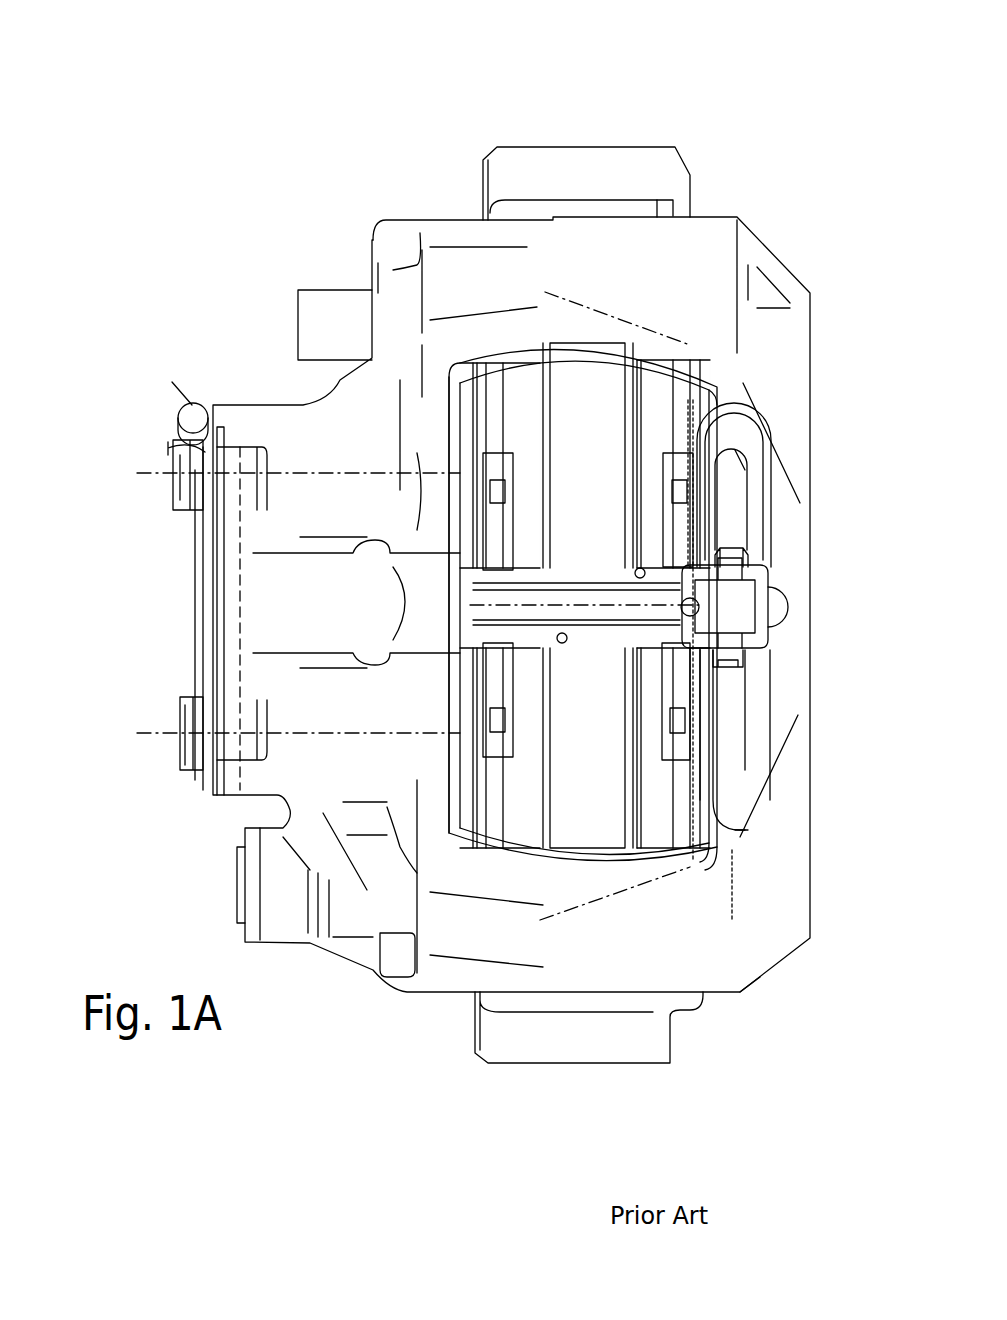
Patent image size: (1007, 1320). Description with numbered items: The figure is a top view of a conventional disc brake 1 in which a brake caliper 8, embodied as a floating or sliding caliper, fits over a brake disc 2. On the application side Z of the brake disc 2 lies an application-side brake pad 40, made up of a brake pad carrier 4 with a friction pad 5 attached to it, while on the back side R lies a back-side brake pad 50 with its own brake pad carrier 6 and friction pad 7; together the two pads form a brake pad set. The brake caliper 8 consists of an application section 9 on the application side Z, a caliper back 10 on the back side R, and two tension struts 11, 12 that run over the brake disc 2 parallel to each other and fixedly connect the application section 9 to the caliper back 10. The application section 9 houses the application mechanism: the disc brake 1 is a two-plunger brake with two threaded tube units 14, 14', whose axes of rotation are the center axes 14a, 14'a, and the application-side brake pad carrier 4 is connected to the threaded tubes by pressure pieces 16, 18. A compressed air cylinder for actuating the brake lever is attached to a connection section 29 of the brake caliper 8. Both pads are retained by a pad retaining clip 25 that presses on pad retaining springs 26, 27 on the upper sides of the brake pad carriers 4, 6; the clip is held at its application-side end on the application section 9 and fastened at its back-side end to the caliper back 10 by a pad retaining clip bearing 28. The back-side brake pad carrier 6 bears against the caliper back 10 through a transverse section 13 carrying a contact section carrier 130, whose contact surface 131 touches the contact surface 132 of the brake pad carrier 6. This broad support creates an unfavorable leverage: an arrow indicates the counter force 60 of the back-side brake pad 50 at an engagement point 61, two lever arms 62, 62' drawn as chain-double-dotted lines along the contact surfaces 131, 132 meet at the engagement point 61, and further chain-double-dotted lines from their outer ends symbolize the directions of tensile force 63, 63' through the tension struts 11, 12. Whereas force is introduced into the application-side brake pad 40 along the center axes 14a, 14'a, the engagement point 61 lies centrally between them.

The disc brake 1 is at (330, 108).
The brake disc 2 is at (573, 357).
The brake pad carrier 4 is at (490, 365).
The friction pad 5 is at (517, 370).
The brake pad carrier 6 is at (677, 373).
The friction pad 7 is at (662, 377).
The brake caliper 8 is at (598, 212).
The application section 9 is at (433, 973).
The caliper back 10 is at (748, 850).
The tension strut 11 is at (650, 243).
The tension strut 12 is at (582, 960).
The transverse section 13 is at (710, 750).
The threaded tube unit 14 is at (251, 473).
The center axis 14a is at (157, 472).
The threaded tube unit 14' is at (251, 733).
The center axis 14'a is at (157, 713).
The pressure piece 16 is at (490, 432).
The pressure piece 18 is at (460, 768).
The pad retaining clip 25 is at (603, 600).
The pad retaining spring 26 is at (497, 510).
The pad retaining spring 27 is at (677, 745).
The pad retaining clip bearing 28 is at (728, 590).
The connection section 29 is at (230, 578).
The application-side brake pad 40 is at (508, 43).
The back-side brake pad 50 is at (737, 82).
The counter force 60 is at (666, 608).
The engagement point 61 is at (700, 612).
The lever arm 62 is at (786, 517).
The lever arm 62' is at (777, 705).
The direction of tensile force 63 is at (617, 223).
The direction of tensile force 63' is at (615, 993).
The contact section carrier 130 is at (715, 398).
The contact surface 131 is at (688, 443).
The contact surface 132 is at (713, 793).
The application side Z is at (331, 1039).
The back side R is at (717, 1047).